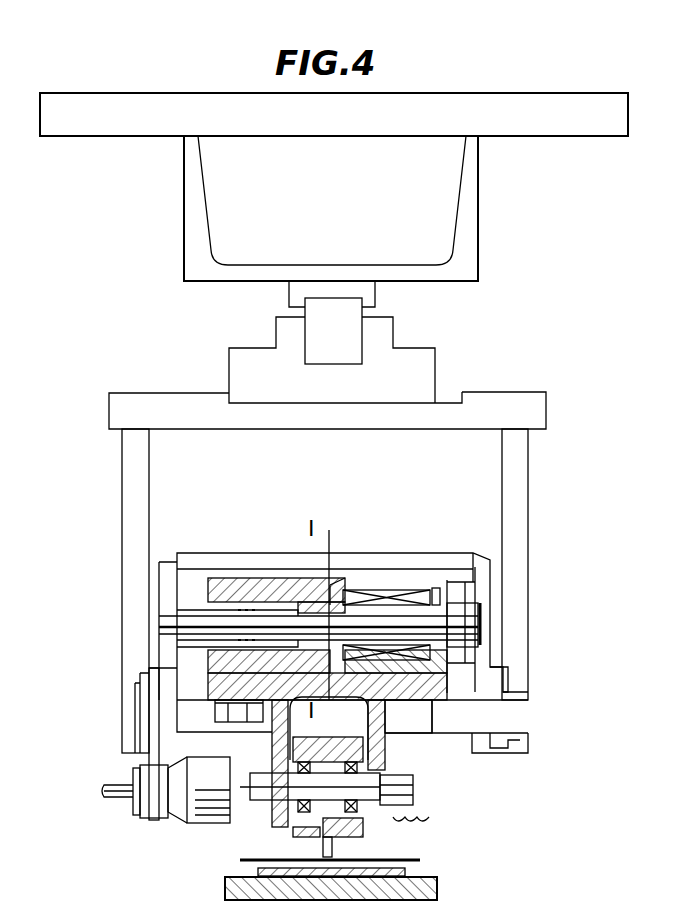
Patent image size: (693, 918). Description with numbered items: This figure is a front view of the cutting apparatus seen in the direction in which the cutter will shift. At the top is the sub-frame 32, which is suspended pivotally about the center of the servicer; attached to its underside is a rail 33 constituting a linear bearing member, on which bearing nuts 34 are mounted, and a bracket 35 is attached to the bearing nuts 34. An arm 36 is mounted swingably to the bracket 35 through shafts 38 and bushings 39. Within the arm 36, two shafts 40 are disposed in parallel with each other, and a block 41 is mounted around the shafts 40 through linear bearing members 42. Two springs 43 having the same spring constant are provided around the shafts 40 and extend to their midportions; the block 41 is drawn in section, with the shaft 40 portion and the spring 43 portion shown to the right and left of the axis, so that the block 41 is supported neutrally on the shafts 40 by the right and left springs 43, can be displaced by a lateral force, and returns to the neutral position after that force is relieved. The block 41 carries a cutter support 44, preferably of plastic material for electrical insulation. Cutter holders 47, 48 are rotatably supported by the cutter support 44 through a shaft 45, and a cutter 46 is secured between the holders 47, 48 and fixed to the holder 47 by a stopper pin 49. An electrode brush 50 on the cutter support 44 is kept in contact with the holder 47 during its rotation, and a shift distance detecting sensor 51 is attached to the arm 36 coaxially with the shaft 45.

The sub-frame 32 is at (495, 93).
The rail 33 is at (366, 308).
The bearing nuts 34 is at (437, 362).
The bracket 35 is at (517, 392).
The arm 36 is at (252, 552).
The shafts 38 is at (528, 712).
The bushings 39 is at (510, 688).
The shafts 40 is at (478, 620).
The block 41 is at (365, 578).
The linear bearing members 42 is at (473, 582).
The springs 43 is at (180, 608).
The cutter support 44 is at (430, 733).
The shaft 45 is at (413, 790).
The cutter 46 is at (324, 742).
The cutter holder 47 is at (368, 817).
The cutter holder 48 is at (298, 832).
The stopper pin 49 is at (383, 740).
The electrode brush 50 is at (393, 817).
The shift distance detecting sensor 51 is at (187, 817).